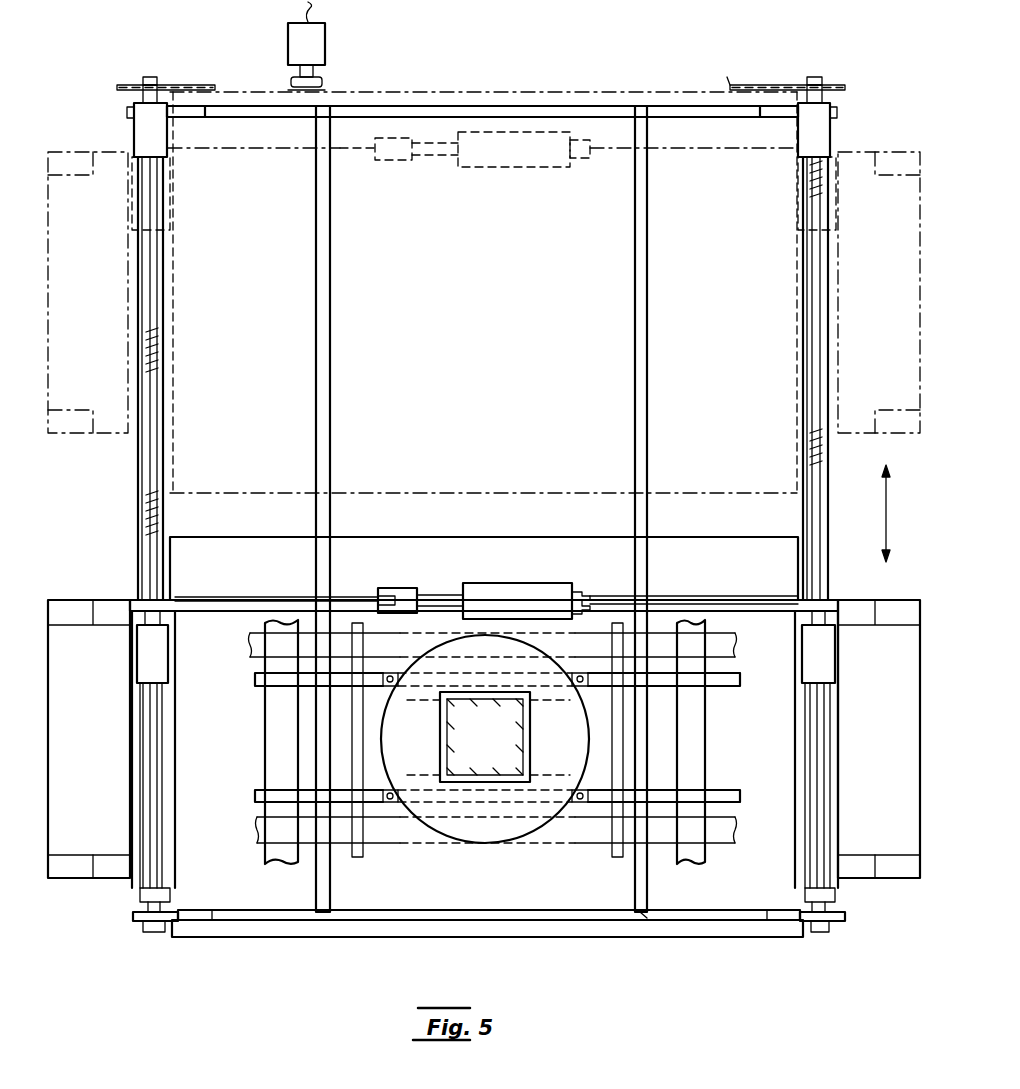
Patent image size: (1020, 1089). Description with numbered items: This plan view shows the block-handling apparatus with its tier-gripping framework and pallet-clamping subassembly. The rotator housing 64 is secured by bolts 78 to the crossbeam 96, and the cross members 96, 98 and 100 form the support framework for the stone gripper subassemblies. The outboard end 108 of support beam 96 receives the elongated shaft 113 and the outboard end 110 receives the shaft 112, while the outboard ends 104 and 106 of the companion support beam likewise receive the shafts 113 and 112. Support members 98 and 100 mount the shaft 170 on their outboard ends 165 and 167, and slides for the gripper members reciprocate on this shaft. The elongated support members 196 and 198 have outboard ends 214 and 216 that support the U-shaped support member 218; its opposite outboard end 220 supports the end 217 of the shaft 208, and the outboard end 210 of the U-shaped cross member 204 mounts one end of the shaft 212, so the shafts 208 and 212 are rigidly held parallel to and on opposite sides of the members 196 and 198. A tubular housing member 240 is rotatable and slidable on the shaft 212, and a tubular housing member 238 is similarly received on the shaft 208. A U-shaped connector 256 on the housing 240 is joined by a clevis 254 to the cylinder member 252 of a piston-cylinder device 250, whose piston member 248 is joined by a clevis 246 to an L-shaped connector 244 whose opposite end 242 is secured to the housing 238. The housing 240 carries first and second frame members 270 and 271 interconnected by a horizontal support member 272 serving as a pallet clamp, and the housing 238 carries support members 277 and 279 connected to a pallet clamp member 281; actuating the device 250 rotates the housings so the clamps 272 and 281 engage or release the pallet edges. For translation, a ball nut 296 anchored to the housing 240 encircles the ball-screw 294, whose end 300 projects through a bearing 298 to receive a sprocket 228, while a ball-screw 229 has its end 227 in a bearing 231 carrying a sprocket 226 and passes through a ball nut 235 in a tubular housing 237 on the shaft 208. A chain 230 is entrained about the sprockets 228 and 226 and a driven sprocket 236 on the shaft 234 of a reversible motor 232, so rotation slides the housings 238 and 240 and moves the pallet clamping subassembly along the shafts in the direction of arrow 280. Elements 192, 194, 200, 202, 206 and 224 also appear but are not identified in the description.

The rotator housing 64 is at (533, 822).
The bolts 78 is at (390, 675).
The crossbeam 96 is at (370, 680).
The cross member 98 is at (358, 737).
The cross member 100 is at (610, 725).
The outboard end of support beam 104 is at (713, 796).
The outboard end of support beam 106 is at (260, 797).
The outboard end of support beam 108 is at (712, 684).
The outboard end of support beam 110 is at (257, 678).
The shaft 112 is at (275, 760).
The elongated shaft 113 is at (695, 738).
The outboard end of support member 165 is at (363, 855).
The outboard end of support member 167 is at (608, 852).
The shaft 170 is at (540, 840).
The lower cross bar 192 is at (660, 793).
The upper cross bar 194 is at (660, 678).
The elongated support member 196 is at (340, 893).
The elongated support member 198 is at (647, 897).
The left column 200 is at (338, 922).
The right column foot 202 is at (648, 912).
The U-shaped cross member 204 is at (540, 918).
The left washer 206 is at (133, 917).
The shaft 208 is at (165, 242).
The outboard end of U-shaped cross member 210 is at (845, 915).
The shaft 212 is at (829, 927).
The outboard end of elongated support member 214 is at (330, 110).
The outboard end of elongated support member 216 is at (637, 107).
The end of shaft 217 is at (162, 165).
The U-shaped support member 218 is at (447, 112).
The outboard end of U-shaped support member 220 is at (127, 110).
The right tab 224 is at (836, 110).
The sprocket 226 is at (170, 86).
The end of ball-screw 227 is at (150, 77).
The sprocket 228 is at (833, 85).
The ball-screw 229 is at (148, 282).
The chain 230 is at (205, 92).
The bearing 231 is at (134, 127).
The reversible motor 232 is at (325, 30).
The motor shaft 234 is at (322, 71).
The ball nut 235 is at (173, 627).
The driven sprocket 236 is at (298, 91).
The tubular housing 237 is at (167, 765).
The tubular housing member 238 is at (175, 725).
The tubular housing member 240 is at (840, 707).
The end of L-shaped connector 242 is at (135, 598).
The L-shaped connector 244 is at (277, 597).
The clevis 246 is at (405, 588).
The piston member 248 is at (445, 592).
The piston-cylinder device 250 is at (506, 170).
The cylinder member 252 is at (557, 588).
The clevis 254 is at (590, 592).
The U-shaped connector 256 is at (698, 597).
The first frame member 270 is at (897, 867).
The second frame member 271 is at (893, 612).
The horizontal support member 272 is at (879, 804).
The support member 277 is at (70, 863).
The support member 279 is at (77, 622).
The arrow 280 is at (884, 510).
The pallet clamp member 281 is at (89, 803).
The ball-screw 294 is at (807, 448).
The ball nut 296 is at (840, 655).
The bearing 298 is at (832, 142).
The end of ball-screw 300 is at (817, 128).